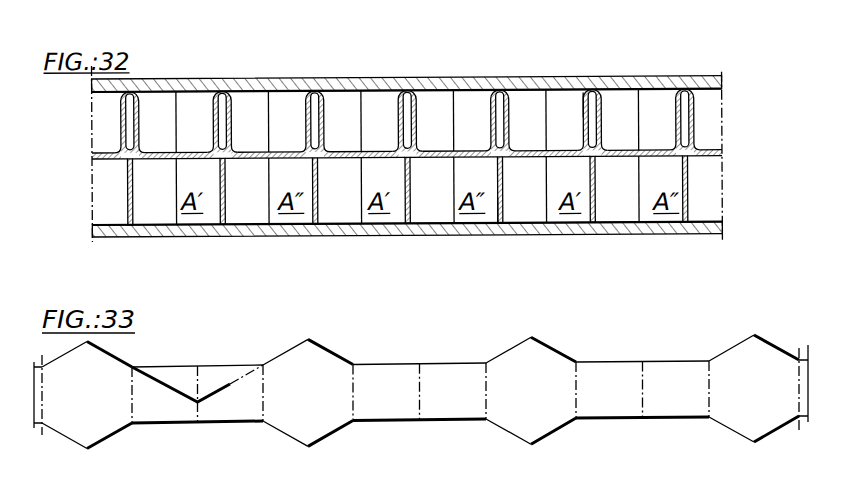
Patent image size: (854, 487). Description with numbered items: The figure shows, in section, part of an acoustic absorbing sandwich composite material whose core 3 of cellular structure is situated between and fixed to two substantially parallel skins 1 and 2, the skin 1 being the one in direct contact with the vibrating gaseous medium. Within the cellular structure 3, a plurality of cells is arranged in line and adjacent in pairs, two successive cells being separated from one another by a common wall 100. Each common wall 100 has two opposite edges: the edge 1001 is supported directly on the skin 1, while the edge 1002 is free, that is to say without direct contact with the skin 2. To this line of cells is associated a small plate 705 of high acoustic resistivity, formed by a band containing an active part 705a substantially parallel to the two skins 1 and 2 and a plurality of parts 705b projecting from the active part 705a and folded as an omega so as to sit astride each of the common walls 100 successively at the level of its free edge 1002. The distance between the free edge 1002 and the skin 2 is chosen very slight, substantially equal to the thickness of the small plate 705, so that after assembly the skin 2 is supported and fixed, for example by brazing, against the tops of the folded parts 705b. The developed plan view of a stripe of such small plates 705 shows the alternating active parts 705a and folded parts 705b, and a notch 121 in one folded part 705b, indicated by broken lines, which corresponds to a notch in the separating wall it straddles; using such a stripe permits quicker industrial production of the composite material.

In FIG. 32, the skin 1 is at (553, 238).
In FIG. 32, the skin 2 is at (470, 84).
In FIG. 32, the core of cellular structure 3 is at (380, 158).
In FIG. 32, the common wall 100 is at (406, 159).
In FIG. 32, the edge of common wall 1001 is at (495, 230).
In FIG. 32, the free edge of common wall 1002 is at (592, 91).
In FIG. 32, the small plate 705 is at (407, 157).
In FIG. 33, the small plate 705 is at (421, 411).
In FIG. 32, the active part 705a is at (521, 155).
In FIG. 33, the active part 705a is at (73, 408).
In FIG. 32, the folded part 705b is at (509, 116).
In FIG. 33, the folded part 705b is at (237, 412).
In FIG. 33, the notch 121 is at (227, 382).